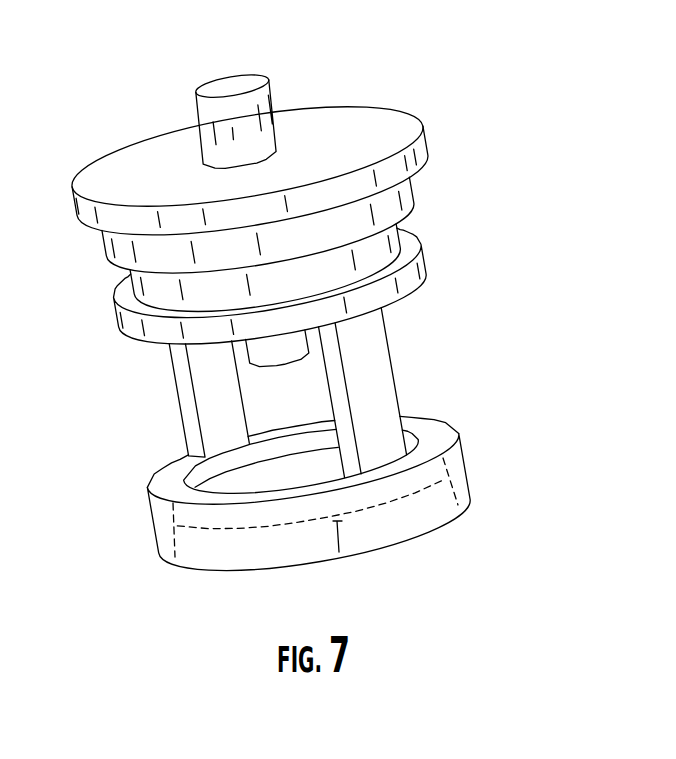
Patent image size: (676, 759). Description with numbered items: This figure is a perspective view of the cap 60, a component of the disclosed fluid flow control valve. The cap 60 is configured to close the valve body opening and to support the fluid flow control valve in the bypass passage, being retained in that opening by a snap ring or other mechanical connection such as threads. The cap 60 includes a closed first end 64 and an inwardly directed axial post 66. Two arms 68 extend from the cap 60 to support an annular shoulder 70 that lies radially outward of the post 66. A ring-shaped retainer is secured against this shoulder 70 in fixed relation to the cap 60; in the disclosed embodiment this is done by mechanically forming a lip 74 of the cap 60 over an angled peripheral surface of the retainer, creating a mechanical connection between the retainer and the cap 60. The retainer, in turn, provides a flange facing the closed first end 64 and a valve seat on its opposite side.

The cap 60 is at (284, 303).
The closed first end 64 is at (323, 140).
The axial post 66 is at (273, 353).
The arms 68 is at (375, 369).
The annular shoulder 70 is at (273, 457).
The lip 74 is at (428, 508).